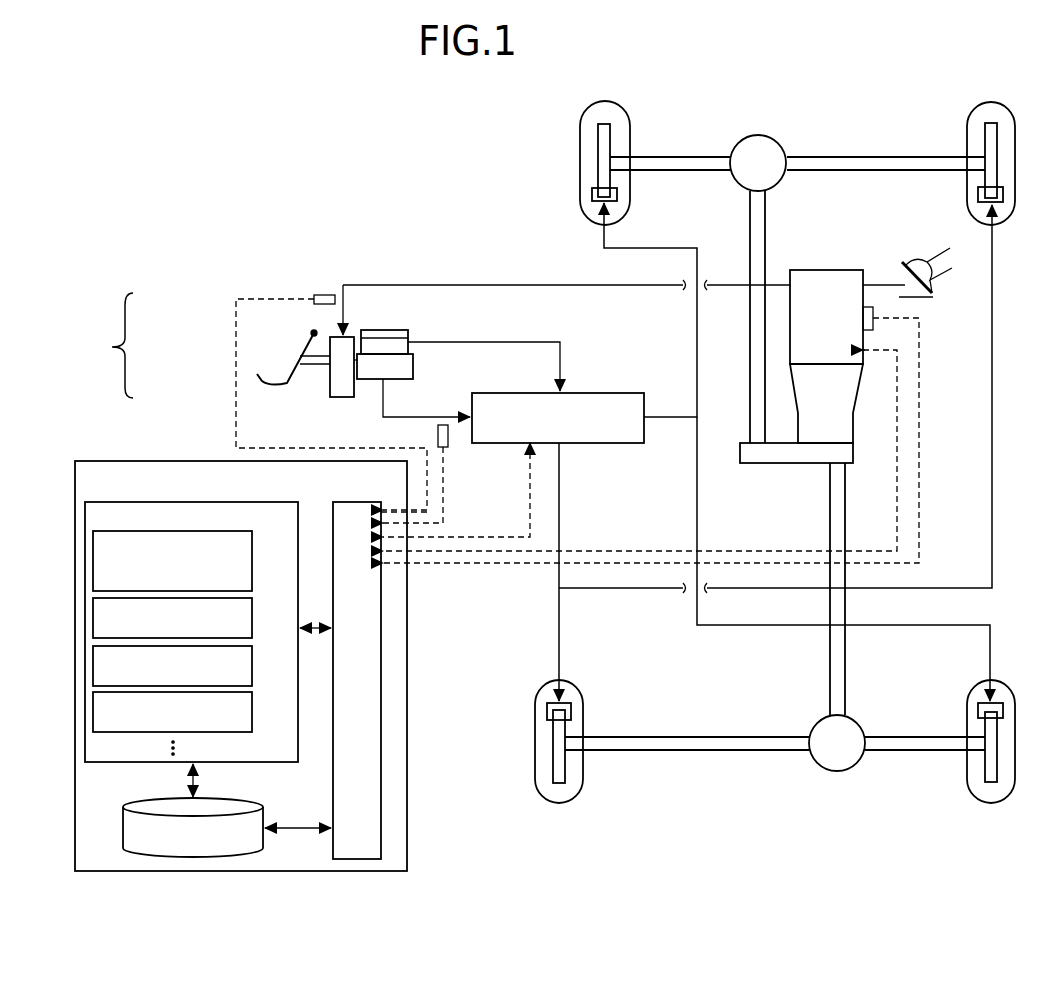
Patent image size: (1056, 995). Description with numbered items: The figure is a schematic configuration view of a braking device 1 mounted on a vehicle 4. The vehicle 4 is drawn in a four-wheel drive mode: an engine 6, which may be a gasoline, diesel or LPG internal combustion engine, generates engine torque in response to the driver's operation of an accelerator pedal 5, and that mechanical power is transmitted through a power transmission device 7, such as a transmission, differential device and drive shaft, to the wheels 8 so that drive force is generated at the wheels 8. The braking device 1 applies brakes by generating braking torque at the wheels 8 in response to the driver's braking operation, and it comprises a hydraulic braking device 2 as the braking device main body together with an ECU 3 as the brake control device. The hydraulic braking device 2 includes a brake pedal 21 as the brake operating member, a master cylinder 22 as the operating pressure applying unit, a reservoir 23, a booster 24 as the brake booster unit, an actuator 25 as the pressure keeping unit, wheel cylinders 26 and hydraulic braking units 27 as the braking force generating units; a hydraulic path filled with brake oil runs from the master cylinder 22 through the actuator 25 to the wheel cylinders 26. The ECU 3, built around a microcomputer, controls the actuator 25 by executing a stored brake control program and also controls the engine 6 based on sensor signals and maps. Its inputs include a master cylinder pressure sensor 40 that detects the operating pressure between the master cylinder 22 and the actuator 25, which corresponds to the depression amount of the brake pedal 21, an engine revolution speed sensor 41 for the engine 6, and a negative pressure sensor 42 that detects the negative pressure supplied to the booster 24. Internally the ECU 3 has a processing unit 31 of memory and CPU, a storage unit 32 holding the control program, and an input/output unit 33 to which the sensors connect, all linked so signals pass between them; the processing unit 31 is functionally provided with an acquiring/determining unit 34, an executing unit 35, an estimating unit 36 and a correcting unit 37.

The braking device 1 is at (112, 347).
The hydraulic braking device 2 is at (222, 336).
The ECU 3 is at (136, 450).
The vehicle 4 is at (701, 65).
The accelerator pedal 5 is at (904, 263).
The engine 6 is at (851, 270).
The power transmission device 7 is at (785, 468).
The wheels 8 is at (611, 110).
The brake pedal 21 is at (282, 386).
The master cylinder 22 is at (367, 376).
The reservoir 23 is at (398, 330).
The booster 24 is at (342, 392).
The actuator 25 is at (615, 393).
The wheel cylinders 26 is at (591, 202).
The hydraulic braking units 27 is at (595, 157).
The processing unit 31 is at (228, 502).
The storage unit 32 is at (225, 800).
The input/output unit 33 is at (355, 502).
The acquiring/determining unit 34 is at (254, 562).
The executing unit 35 is at (254, 618).
The estimating unit 36 is at (254, 665).
The correcting unit 37 is at (254, 711).
The master cylinder pressure sensor 40 is at (448, 437).
The engine revolution speed sensor 41 is at (873, 312).
The negative pressure sensor 42 is at (325, 295).